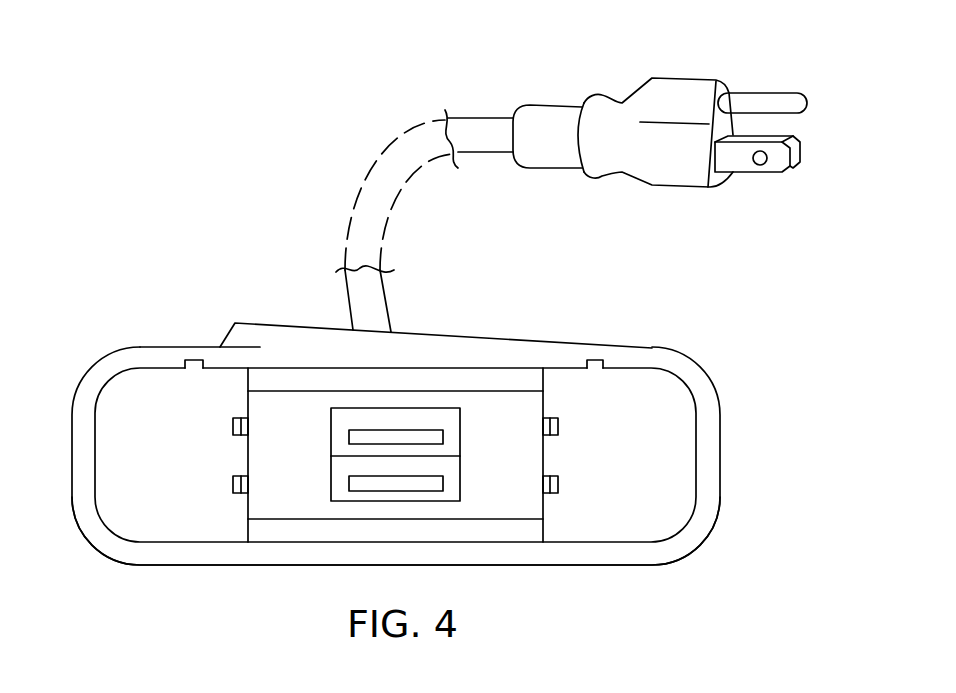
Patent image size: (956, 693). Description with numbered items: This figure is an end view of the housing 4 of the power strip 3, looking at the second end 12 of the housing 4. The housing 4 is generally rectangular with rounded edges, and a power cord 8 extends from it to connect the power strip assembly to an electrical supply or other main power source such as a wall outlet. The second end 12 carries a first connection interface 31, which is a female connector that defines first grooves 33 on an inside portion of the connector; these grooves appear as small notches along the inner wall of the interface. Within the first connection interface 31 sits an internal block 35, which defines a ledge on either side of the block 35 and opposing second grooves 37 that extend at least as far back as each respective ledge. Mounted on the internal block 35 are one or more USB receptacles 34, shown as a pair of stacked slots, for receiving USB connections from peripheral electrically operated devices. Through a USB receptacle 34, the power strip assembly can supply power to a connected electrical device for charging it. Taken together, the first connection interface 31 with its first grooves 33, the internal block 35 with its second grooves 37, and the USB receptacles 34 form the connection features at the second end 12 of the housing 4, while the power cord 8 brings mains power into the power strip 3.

The power strip 3 is at (624, 298).
The housing 4 is at (158, 347).
The power cord 8 is at (388, 300).
The second end 12 is at (655, 562).
The first connection interface 31 is at (166, 492).
The first grooves 33 is at (196, 368).
The USB receptacles 34 is at (331, 428).
The internal block 35 is at (514, 447).
The second grooves 37 is at (226, 453).